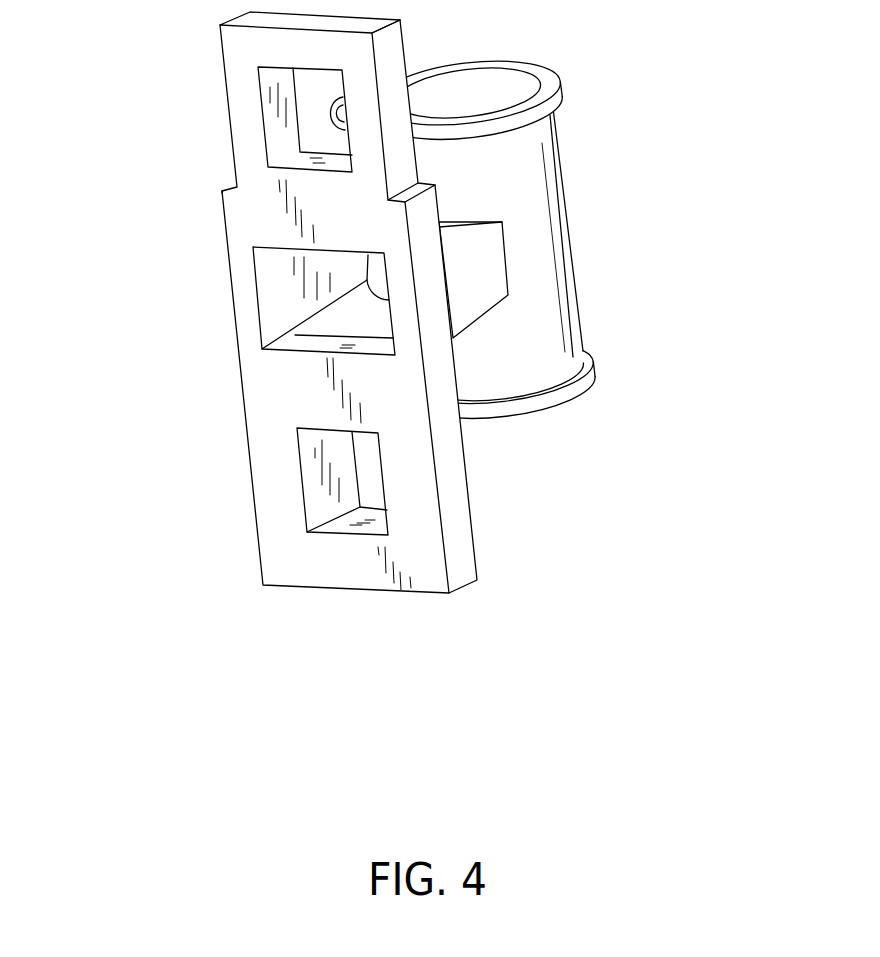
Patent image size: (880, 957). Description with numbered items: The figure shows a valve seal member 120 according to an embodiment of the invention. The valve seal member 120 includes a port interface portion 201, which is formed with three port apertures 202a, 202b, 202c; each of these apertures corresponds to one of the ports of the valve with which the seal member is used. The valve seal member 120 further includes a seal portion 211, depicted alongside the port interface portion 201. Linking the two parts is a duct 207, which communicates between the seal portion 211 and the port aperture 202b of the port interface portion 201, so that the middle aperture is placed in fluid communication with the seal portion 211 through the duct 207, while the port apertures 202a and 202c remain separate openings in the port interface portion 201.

The valve seal member 120 is at (162, 682).
The port interface portion 201 is at (447, 610).
The port aperture 202a is at (263, 116).
The port aperture 202b is at (258, 297).
The port aperture 202c is at (300, 487).
The duct 207 is at (470, 295).
The seal portion 211 is at (551, 295).